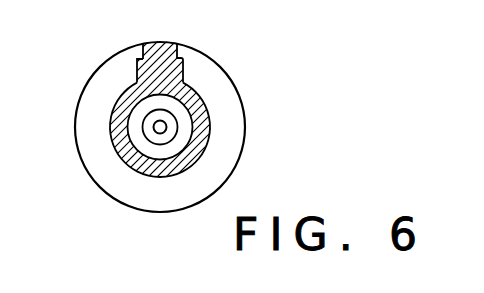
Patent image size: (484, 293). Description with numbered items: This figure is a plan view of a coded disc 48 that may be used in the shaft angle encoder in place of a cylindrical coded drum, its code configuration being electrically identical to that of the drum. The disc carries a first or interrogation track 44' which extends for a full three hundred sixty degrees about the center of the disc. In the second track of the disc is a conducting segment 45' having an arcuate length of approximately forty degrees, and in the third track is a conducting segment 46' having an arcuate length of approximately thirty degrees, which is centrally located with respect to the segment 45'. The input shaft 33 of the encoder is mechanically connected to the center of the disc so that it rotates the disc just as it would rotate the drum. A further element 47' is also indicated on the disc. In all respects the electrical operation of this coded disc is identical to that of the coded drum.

The input shaft 33 is at (157, 133).
The first or interrogation track 44' is at (181, 110).
The conducting segment 45' is at (204, 58).
The conducting segment 46' is at (148, 37).
The outer ring 47' is at (171, 127).
The coded disc 48 is at (181, 114).